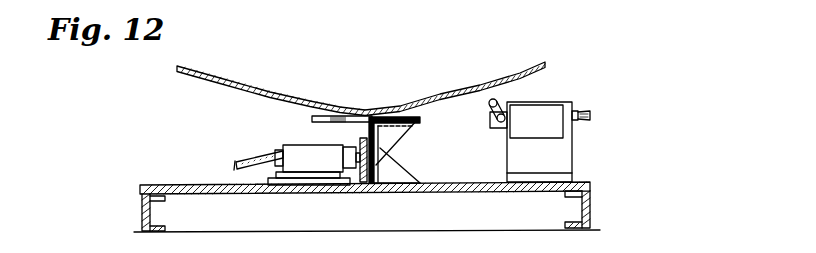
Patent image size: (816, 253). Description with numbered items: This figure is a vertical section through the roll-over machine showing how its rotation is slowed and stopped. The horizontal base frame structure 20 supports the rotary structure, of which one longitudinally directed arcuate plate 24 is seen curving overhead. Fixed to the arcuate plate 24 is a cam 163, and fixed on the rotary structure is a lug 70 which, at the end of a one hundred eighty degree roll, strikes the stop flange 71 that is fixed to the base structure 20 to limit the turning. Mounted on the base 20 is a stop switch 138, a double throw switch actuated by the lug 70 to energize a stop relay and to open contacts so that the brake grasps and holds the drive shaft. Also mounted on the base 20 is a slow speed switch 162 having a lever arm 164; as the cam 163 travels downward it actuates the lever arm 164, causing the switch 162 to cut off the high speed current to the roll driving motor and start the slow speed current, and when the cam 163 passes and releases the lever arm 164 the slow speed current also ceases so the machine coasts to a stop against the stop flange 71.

The base frame structure 20 is at (428, 195).
The arcuate plate 24 is at (236, 88).
The cam 163 is at (312, 118).
The stop switch 138 is at (296, 150).
The lug 70 is at (386, 137).
The stop flange 71 is at (390, 168).
The lever arm 164 is at (488, 110).
The slow speed switch 162 is at (540, 112).